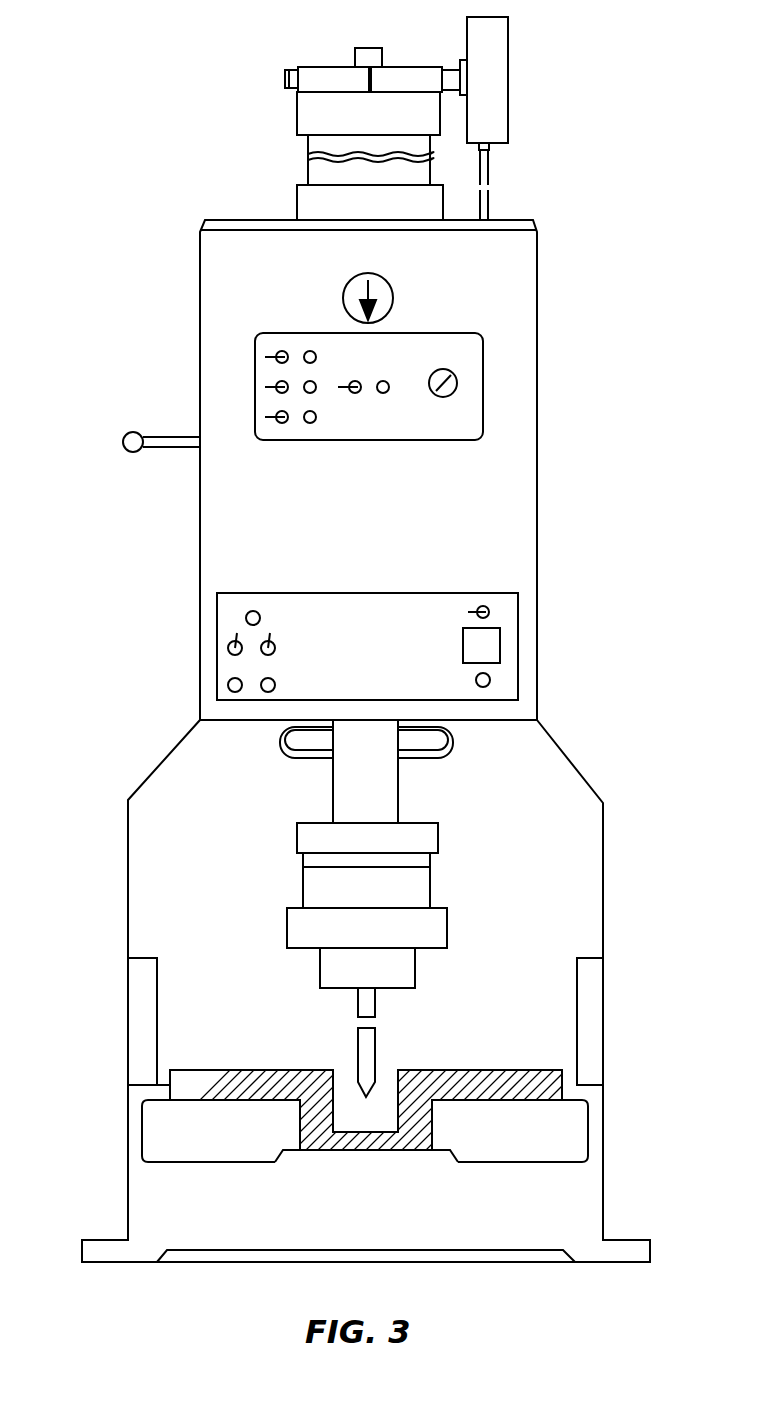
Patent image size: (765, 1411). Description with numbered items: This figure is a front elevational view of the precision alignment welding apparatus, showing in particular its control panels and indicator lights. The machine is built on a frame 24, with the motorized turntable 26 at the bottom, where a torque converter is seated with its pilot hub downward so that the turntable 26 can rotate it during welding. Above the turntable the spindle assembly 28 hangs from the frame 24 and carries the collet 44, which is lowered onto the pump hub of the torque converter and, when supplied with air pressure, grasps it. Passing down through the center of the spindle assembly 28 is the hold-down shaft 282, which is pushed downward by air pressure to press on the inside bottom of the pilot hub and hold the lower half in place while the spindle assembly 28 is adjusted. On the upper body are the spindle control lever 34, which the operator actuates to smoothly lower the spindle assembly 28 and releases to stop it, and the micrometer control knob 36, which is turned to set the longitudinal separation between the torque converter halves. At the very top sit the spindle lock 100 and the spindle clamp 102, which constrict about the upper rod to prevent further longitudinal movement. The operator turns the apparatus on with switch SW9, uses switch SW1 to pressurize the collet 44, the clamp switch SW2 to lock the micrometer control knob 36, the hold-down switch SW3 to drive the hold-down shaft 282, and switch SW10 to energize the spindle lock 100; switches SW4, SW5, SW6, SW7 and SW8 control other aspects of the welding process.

The frame 24 is at (367, 990).
The turntable 26 is at (364, 1092).
The spindle assembly 28 is at (332, 788).
The spindle control lever 34 is at (131, 427).
The micrometer control knob 36 is at (340, 294).
The collet 44 is at (240, 903).
The spindle lock 100 is at (523, 118).
The spindle clamp 102 is at (372, 110).
The hold-down shaft 282 is at (200, 995).
The switch SW1 is at (210, 330).
The clamp switch SW2 is at (206, 363).
The hold-down switch SW3 is at (204, 396).
The switch SW4 is at (189, 569).
The switch SW5 is at (192, 603).
The switch SW6 is at (173, 619).
The switch SW7 is at (190, 655).
The switch SW8 is at (169, 674).
The switch SW9 is at (552, 576).
The switch SW10 is at (418, 344).